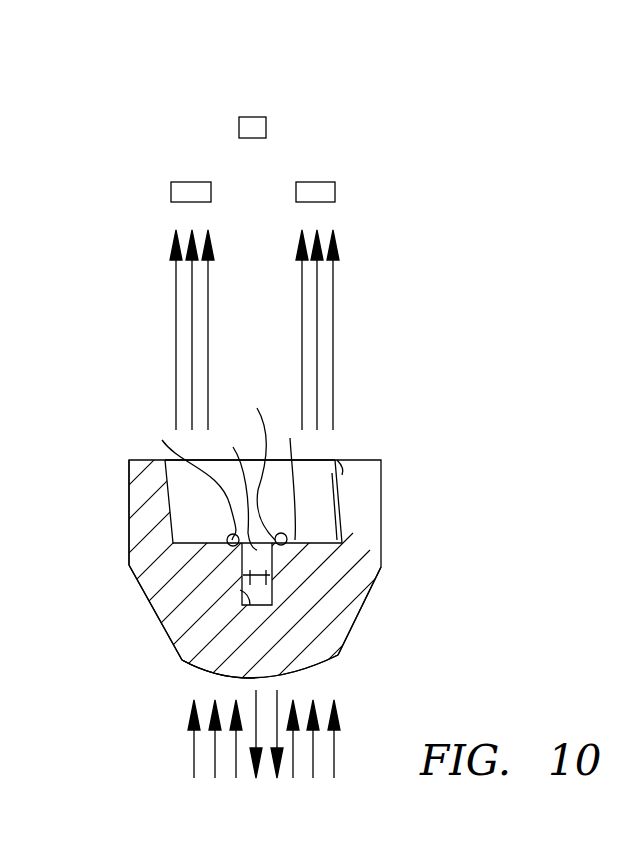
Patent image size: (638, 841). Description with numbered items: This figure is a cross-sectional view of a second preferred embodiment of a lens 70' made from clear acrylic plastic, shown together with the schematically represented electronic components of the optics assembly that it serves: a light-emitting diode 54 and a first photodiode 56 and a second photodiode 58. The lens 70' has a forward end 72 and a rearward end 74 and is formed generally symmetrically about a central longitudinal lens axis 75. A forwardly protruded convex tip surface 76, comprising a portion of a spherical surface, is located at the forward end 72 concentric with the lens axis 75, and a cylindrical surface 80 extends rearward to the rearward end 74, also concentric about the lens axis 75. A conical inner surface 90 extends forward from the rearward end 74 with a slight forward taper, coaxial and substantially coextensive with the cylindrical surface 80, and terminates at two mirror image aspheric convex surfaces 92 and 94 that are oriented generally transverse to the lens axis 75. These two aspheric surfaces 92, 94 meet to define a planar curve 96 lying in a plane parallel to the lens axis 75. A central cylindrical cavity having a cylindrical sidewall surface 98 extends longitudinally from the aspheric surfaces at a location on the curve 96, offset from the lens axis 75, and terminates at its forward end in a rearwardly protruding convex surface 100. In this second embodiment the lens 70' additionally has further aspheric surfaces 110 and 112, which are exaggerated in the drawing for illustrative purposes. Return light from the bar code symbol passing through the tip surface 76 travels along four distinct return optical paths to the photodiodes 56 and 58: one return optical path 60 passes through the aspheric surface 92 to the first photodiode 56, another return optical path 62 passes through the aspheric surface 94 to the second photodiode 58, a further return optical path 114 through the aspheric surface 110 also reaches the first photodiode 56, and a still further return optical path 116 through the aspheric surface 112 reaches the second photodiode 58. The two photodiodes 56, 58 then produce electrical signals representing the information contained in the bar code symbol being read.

The light-emitting diode 54 is at (250, 123).
The first photodiode 56 is at (193, 186).
The second photodiode 58 is at (320, 184).
The return optical path 60 is at (192, 294).
The return optical path 62 is at (317, 282).
The lens 70' is at (140, 639).
The forward end 72 is at (330, 672).
The rearward end 74 is at (313, 453).
The central longitudinal lens axis 75 is at (370, 592).
The convex tip surface 76 is at (190, 667).
The cylindrical surface 80 is at (382, 508).
The conical inner surface 90 is at (337, 473).
The aspheric convex surface 92 is at (190, 542).
The aspheric convex surface 94 is at (283, 478).
The planar curve 96 is at (236, 487).
The cylindrical sidewall surface 98 is at (242, 567).
The rearwardly protruding convex surface 100 is at (240, 590).
The aspheric surface 110 is at (175, 482).
The aspheric surface 112 is at (258, 464).
The return optical path 114 is at (208, 387).
The return optical path 116 is at (302, 373).